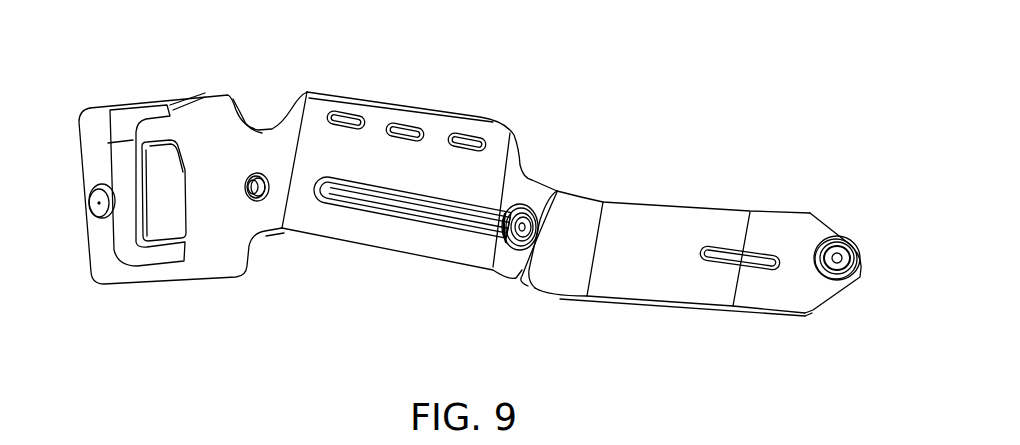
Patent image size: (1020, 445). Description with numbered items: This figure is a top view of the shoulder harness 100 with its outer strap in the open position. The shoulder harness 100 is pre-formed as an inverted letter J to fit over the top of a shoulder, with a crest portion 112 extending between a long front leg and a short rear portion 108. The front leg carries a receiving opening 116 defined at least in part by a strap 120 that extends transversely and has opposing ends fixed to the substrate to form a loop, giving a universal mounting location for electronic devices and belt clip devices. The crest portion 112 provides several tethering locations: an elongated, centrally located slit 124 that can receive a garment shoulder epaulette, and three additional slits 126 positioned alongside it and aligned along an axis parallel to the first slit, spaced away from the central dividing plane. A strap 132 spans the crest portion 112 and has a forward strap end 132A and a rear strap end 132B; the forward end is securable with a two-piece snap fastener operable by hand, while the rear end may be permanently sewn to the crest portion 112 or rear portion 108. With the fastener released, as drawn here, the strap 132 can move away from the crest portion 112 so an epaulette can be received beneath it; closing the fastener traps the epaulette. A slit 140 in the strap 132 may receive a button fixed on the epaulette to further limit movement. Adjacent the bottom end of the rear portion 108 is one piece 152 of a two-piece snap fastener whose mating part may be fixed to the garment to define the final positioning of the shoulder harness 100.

The shoulder harness 100 is at (794, 83).
The rear portion 108 is at (567, 167).
The crest portion 112 is at (437, 289).
The receiving opening 116 is at (180, 223).
The strap 120 is at (128, 123).
The slit 124 is at (377, 206).
The additional slits 126 is at (350, 114).
The strap 132 is at (691, 230).
The forward strap end 132A is at (806, 222).
The rear strap end 132B is at (531, 275).
The slit 140 is at (750, 254).
The fastener piece 152 is at (510, 266).